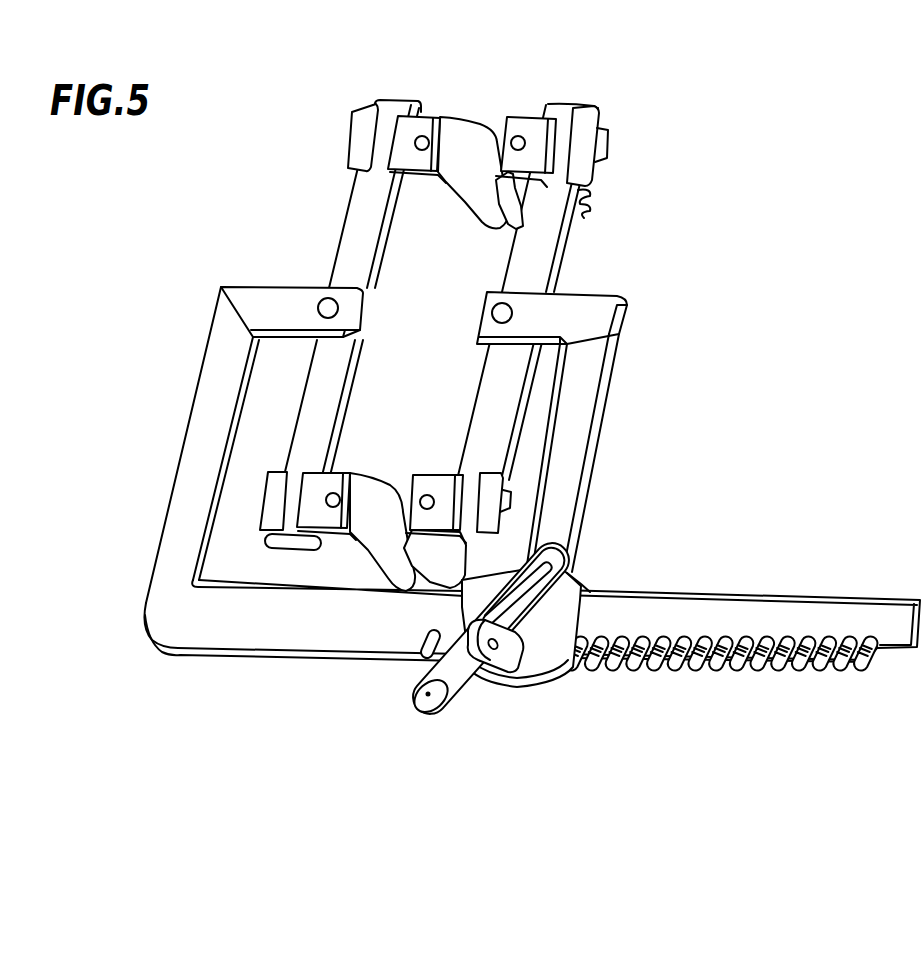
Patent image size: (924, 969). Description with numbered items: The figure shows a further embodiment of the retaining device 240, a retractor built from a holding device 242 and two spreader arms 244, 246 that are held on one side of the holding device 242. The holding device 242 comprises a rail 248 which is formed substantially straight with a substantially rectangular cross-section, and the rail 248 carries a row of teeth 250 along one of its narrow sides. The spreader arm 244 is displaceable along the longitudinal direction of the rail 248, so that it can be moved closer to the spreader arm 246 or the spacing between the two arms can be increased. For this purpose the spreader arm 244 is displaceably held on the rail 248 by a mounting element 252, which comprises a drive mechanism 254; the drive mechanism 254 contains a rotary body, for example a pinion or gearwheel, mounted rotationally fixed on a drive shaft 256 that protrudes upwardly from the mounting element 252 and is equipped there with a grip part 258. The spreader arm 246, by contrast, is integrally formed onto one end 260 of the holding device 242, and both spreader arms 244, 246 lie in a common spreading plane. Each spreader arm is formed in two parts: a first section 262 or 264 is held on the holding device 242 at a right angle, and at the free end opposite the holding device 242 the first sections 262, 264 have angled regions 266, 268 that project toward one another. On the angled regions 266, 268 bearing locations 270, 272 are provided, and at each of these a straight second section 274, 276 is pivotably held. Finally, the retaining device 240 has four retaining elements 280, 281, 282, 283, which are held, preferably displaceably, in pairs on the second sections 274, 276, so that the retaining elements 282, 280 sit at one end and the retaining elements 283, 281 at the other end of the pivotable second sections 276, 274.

The retaining device 240 is at (688, 304).
The holding device 242 is at (643, 672).
The spreader arm 244 is at (618, 384).
The spreader arm 246 is at (185, 380).
The rail 248 is at (774, 589).
The row of teeth 250 is at (777, 667).
The mounting element 252 is at (588, 572).
The drive mechanism 254 is at (484, 690).
The drive shaft 256 is at (505, 652).
The grip part 258 is at (423, 703).
The end of the holding device 260 is at (144, 642).
The first section 262 is at (570, 447).
The first section 264 is at (202, 458).
The angled region 266 is at (563, 307).
The angled region 268 is at (263, 300).
The bearing location 270 is at (490, 315).
The bearing location 272 is at (317, 310).
The second section 274 is at (573, 237).
The second section 276 is at (367, 205).
The retaining element 280 is at (505, 125).
The retaining element 281 is at (417, 497).
The retaining element 282 is at (458, 128).
The retaining element 283 is at (377, 487).